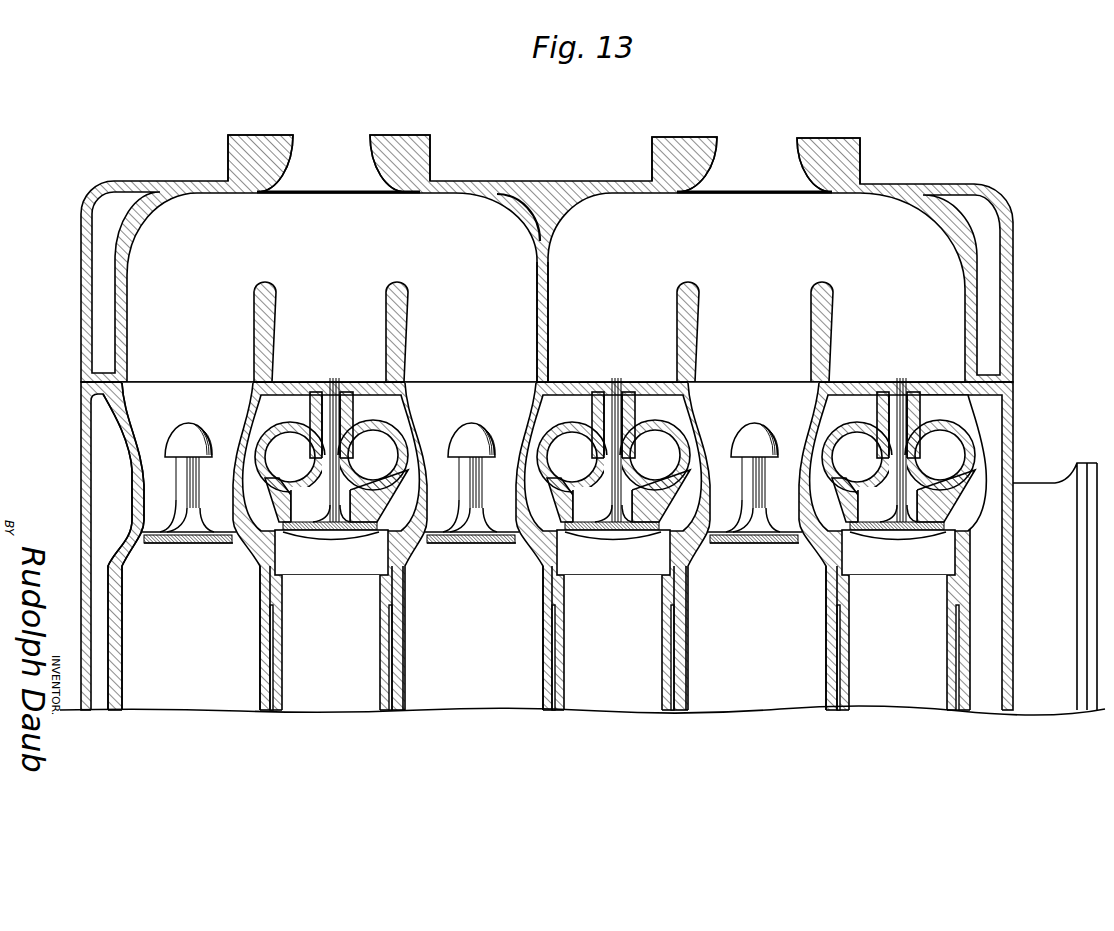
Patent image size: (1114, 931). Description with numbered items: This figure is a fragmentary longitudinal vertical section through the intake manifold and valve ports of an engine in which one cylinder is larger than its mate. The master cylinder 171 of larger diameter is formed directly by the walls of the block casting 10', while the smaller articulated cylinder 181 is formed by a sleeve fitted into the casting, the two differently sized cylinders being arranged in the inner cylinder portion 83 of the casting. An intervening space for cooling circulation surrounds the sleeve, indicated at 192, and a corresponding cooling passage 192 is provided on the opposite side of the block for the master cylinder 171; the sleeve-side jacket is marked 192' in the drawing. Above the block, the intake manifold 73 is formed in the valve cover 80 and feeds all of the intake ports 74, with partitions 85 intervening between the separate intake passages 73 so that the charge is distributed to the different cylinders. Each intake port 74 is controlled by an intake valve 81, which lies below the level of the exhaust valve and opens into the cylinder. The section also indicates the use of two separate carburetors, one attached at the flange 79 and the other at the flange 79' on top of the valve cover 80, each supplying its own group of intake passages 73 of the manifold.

The block casting 10' is at (526, 394).
The intake manifold 73 is at (546, 287).
The intake port 74 is at (554, 549).
The flange 79 is at (329, 142).
The flange 79' is at (756, 141).
The valve cover 80 is at (81, 263).
The intake valve 81 is at (549, 455).
The inner cylinder portion 83 is at (116, 604).
The partition 85 is at (499, 322).
The master cylinder 171 is at (529, 638).
The articulated cylinder 181 is at (615, 623).
The cooling passage 192 is at (111, 555).
The sleeve / jacket wall 192' is at (588, 657).